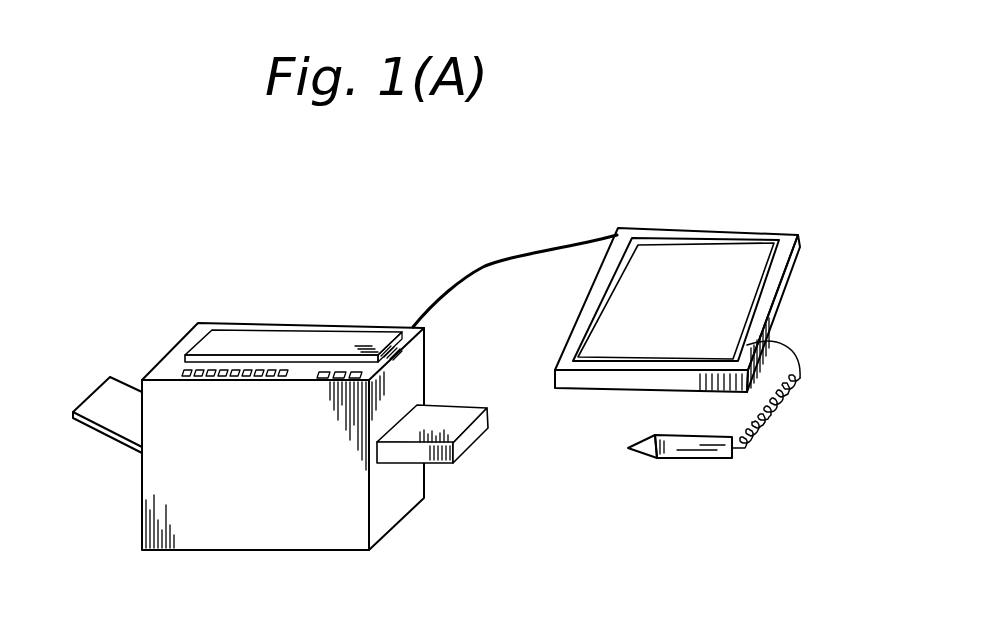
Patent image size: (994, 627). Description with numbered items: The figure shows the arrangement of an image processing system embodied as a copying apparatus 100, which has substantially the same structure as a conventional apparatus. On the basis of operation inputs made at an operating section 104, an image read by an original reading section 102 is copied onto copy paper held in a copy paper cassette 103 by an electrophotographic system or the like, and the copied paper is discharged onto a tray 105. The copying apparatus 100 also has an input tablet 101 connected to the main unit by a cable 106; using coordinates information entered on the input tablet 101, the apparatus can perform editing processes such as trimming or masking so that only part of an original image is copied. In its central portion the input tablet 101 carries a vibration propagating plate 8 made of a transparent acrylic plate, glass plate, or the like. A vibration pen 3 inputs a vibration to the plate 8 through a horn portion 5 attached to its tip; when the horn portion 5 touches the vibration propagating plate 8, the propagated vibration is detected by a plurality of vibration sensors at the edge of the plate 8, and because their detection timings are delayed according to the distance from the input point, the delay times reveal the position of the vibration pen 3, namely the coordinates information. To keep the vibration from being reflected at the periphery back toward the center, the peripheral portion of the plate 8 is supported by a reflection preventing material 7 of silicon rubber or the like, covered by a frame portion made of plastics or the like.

The copying apparatus 100 is at (248, 547).
The input tablet 101 is at (612, 223).
The original reading section 102 is at (233, 330).
The copy paper cassette 103 is at (440, 463).
The operating section 104 is at (185, 370).
The tray 105 is at (102, 407).
The cable 106 is at (488, 263).
The reflection preventing material 7 is at (760, 240).
The vibration propagating plate 8 is at (658, 258).
The vibration pen 3 is at (700, 458).
The horn portion 5 is at (628, 448).